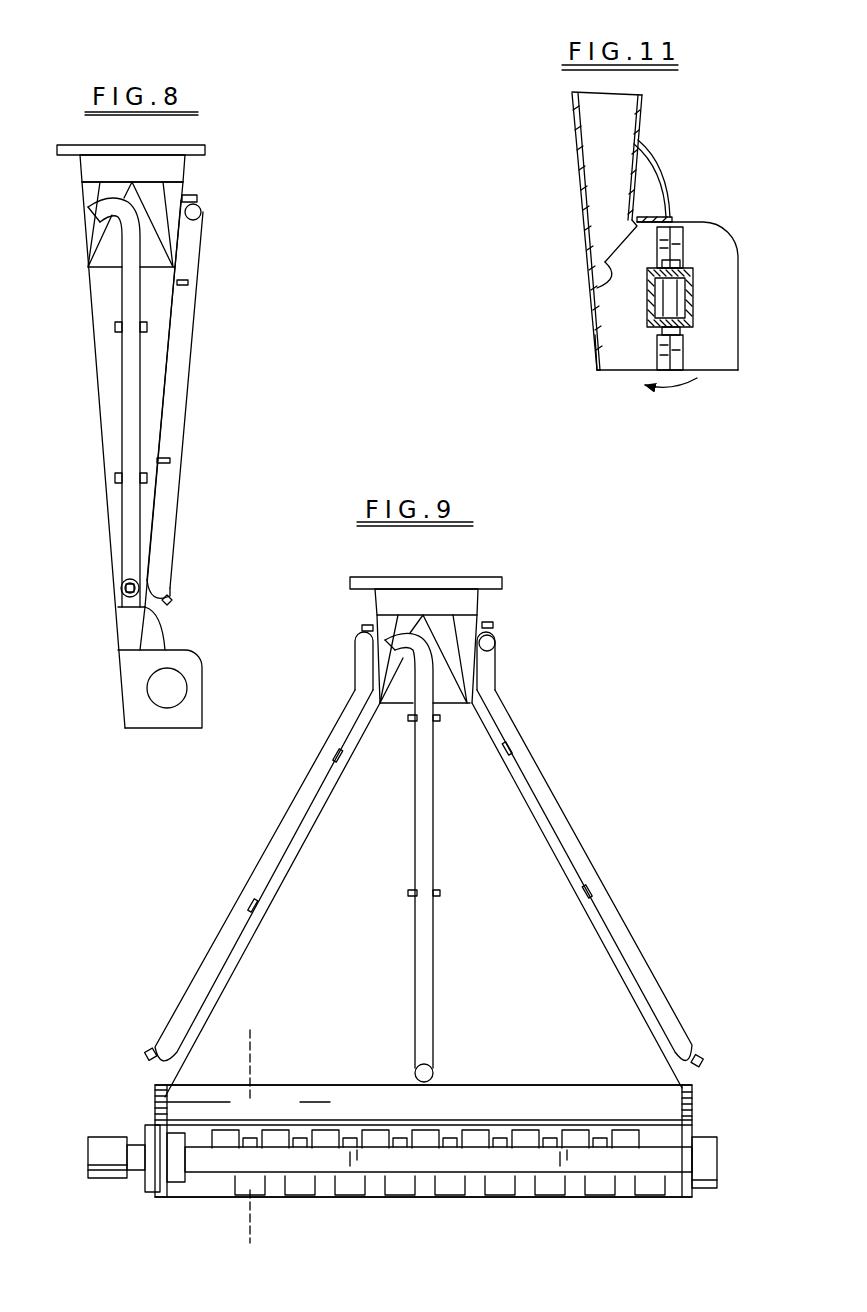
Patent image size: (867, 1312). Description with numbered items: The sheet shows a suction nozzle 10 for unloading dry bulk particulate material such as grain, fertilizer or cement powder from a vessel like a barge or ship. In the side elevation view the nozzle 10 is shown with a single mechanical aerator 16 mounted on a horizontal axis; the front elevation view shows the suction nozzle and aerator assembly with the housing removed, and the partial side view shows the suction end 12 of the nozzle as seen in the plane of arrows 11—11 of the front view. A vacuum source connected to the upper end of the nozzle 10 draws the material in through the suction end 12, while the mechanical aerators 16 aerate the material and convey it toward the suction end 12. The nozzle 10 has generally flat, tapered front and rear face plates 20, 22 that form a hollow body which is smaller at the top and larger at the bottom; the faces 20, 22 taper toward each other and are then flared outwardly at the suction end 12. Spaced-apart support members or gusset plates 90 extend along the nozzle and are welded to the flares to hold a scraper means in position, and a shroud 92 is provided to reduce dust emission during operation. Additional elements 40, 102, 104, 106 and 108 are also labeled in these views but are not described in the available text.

In FIG. 8, the suction nozzle 10 is at (205, 408).
In FIG. 9, the suction nozzle 10 is at (592, 795).
In FIG. 9, the arrows 11— 11 is at (250, 1067).
In FIG. 8, the suction end 12 is at (203, 610).
In FIG. 11, the suction end 12 is at (593, 378).
In FIG. 9, the suction end 12 is at (343, 1213).
In FIG. 8, the mechanical aerator 16 is at (202, 685).
In FIG. 11, the mechanical aerator 16 is at (710, 288).
In FIG. 9, the mechanical aerator 16 is at (478, 1180).
In FIG. 11, the front face plate 20 is at (642, 127).
In FIG. 9, the front face plate 20 is at (627, 1060).
In FIG. 8, the rear face plate 22 is at (112, 563).
In FIG. 11, the rear face plate 22 is at (578, 158).
In FIG. 9, the motor 40 is at (100, 1178).
In FIG. 11, the gusset plates 90 is at (608, 273).
In FIG. 11, the shroud 92 is at (682, 182).
In FIG. 9, the shroud 92 is at (527, 1073).
In FIG. 8, the side wall 102 is at (125, 702).
In FIG. 11, the side wall 102 is at (597, 333).
In FIG. 11, the cross plate 104 is at (653, 207).
In FIG. 9, the cross plate 104 is at (457, 1122).
In FIG. 8, the curved plate 106 is at (160, 638).
In FIG. 11, the curved plate 106 is at (658, 163).
In FIG. 9, the curved plate 106 is at (342, 1098).
In FIG. 11, the edge 108 is at (635, 227).